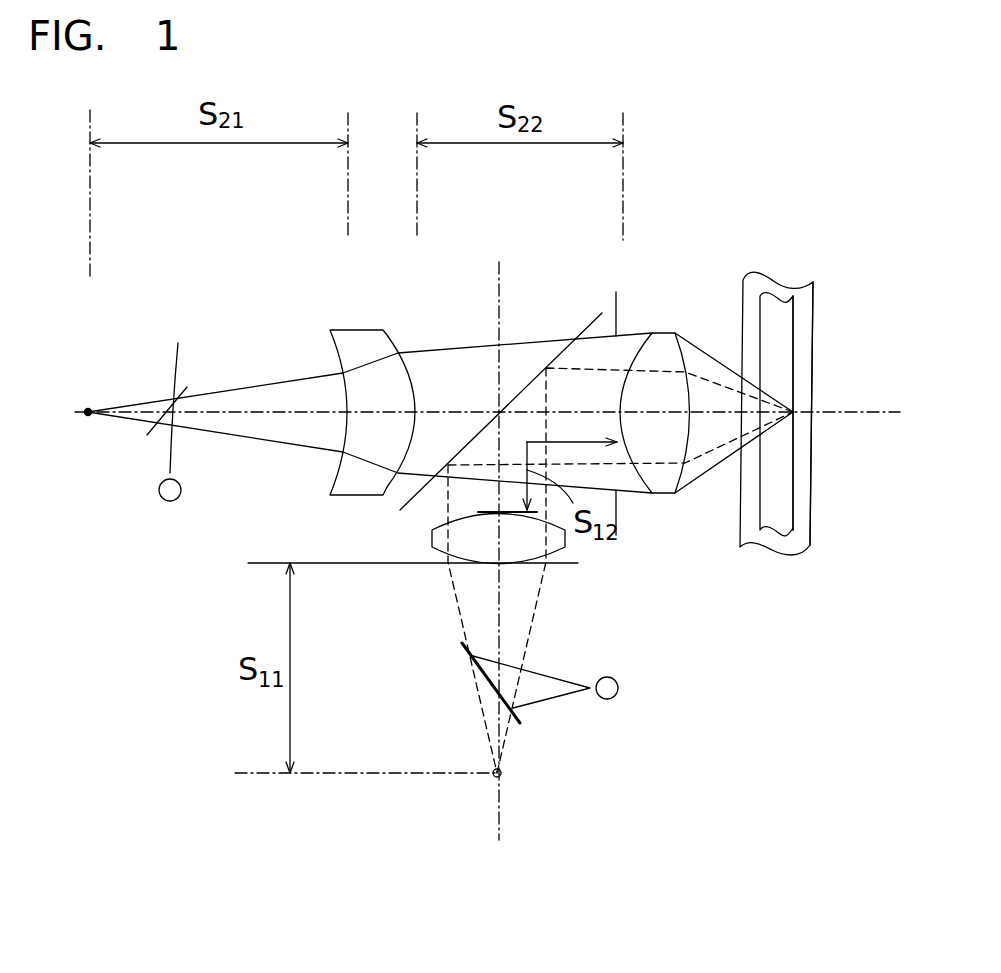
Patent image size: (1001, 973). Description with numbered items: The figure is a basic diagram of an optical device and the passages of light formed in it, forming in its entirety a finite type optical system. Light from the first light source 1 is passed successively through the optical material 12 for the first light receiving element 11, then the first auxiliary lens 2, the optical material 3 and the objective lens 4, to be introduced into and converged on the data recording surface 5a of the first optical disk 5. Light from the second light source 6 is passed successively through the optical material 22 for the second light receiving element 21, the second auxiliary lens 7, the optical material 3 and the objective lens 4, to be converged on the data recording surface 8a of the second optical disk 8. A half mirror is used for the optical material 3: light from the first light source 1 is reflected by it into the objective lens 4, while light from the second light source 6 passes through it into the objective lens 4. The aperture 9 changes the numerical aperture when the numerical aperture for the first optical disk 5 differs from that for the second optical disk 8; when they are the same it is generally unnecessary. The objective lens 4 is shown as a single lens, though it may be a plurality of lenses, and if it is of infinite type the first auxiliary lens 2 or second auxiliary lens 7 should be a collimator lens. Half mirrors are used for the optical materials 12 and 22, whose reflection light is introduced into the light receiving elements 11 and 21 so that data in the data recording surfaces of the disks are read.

The first light source 1 is at (503, 771).
The first auxiliary lens 2 is at (547, 553).
The optical material 3 is at (588, 322).
The objective lens 4 is at (658, 343).
The first optical disk 5 is at (745, 512).
The data recording surface of the first optical disk 5a is at (815, 312).
The second light source 6 is at (88, 408).
The second auxiliary lens 7 is at (342, 330).
The second optical disk 8 is at (777, 513).
The data recording surface of the second optical disk 8a is at (793, 377).
The aperture 9 is at (616, 292).
The first light receiving element 11 is at (618, 686).
The optical material for the first light receiving element 12 is at (462, 643).
The second light receiving element 21 is at (162, 498).
The optical material for the second light receiving element 22 is at (174, 386).